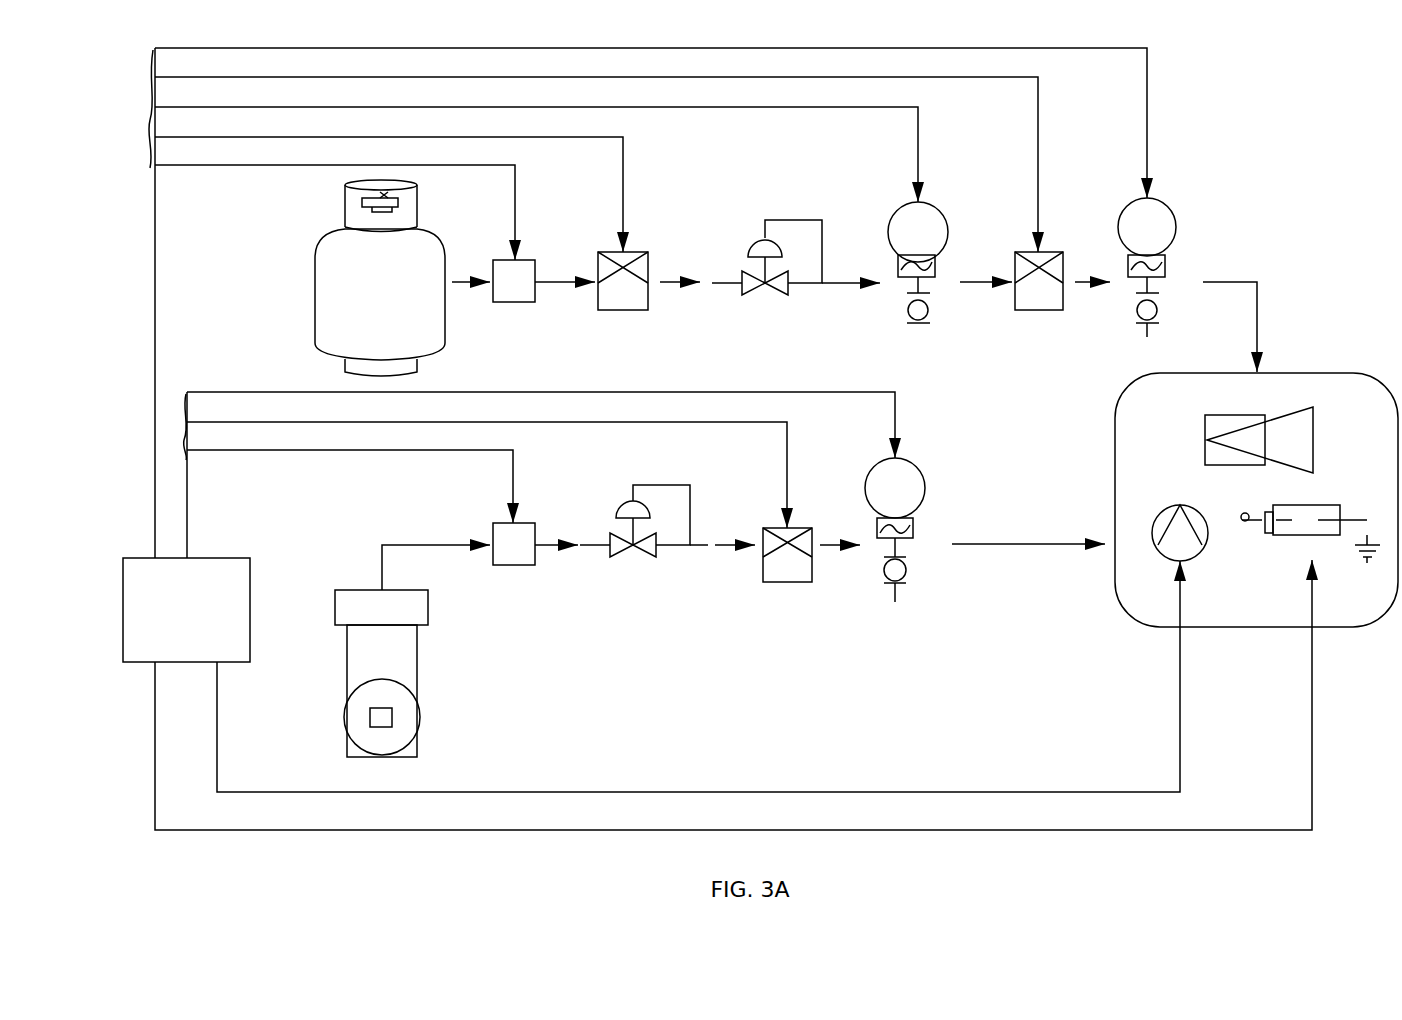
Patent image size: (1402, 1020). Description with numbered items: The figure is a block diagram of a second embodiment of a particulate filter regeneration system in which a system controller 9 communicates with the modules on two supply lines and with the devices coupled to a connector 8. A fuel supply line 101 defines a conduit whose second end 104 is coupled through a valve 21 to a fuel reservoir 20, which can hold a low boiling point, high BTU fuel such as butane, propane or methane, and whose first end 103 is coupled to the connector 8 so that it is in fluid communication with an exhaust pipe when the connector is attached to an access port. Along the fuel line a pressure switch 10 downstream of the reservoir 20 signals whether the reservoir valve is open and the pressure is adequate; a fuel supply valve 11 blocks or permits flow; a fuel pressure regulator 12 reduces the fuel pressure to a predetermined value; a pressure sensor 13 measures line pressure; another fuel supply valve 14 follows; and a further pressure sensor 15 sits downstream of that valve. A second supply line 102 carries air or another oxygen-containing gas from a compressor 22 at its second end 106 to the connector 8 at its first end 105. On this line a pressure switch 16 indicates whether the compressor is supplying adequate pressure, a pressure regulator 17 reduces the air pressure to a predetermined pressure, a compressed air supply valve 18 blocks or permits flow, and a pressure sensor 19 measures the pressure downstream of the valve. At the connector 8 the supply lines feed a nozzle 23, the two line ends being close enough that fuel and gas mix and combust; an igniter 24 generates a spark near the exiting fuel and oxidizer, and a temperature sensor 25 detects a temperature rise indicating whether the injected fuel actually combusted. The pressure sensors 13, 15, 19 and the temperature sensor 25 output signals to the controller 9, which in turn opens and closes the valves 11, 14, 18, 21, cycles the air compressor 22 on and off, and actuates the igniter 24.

The connector 8 is at (1327, 372).
The system controller 9 is at (123, 558).
The pressure switch 10 is at (525, 302).
The fuel supply valve 11 is at (608, 310).
The fuel pressure regulator 12 is at (750, 296).
The pressure sensor 13 is at (912, 305).
The fuel supply valve 14 is at (1020, 310).
The pressure sensor 15 is at (1138, 310).
The pressure switch 16 is at (505, 563).
The pressure regulator 17 is at (617, 553).
The compressed air supply valve 18 is at (770, 582).
The pressure sensor 19 is at (892, 585).
The fuel reservoir 20 is at (380, 302).
The valve 21 is at (362, 200).
The compressor 22 is at (405, 710).
The nozzle 23 is at (1302, 438).
The igniter 24 is at (1185, 558).
The temperature sensor 25 is at (1325, 535).
The supply line 101 is at (700, 287).
The supply line 102 is at (730, 558).
The first end 103 is at (1242, 368).
The second end 104 is at (486, 308).
The first end 105 is at (1093, 562).
The second end 106 is at (372, 583).